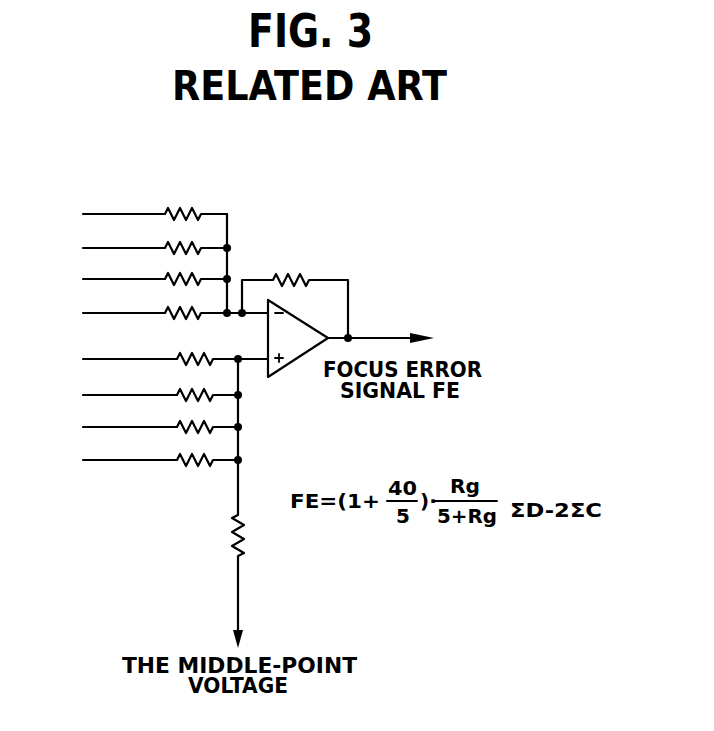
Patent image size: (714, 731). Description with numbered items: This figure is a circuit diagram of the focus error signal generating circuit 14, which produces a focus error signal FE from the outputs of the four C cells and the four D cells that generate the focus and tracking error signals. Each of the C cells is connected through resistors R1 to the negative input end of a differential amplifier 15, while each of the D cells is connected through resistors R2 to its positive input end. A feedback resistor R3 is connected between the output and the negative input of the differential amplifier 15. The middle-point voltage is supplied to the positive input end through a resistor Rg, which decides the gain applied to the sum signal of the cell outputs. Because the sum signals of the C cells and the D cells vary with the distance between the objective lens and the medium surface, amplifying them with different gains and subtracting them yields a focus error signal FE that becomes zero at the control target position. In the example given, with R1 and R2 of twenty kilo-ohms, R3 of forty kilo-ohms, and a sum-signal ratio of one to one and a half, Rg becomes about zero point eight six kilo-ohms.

The focus error signal generating circuit 14 is at (250, 410).
The differential amplifier 15 is at (308, 321).
The resistors R1 is at (175, 251).
The resistors R2 is at (175, 398).
The resistor R3 is at (295, 292).
The resistor Rg is at (213, 503).